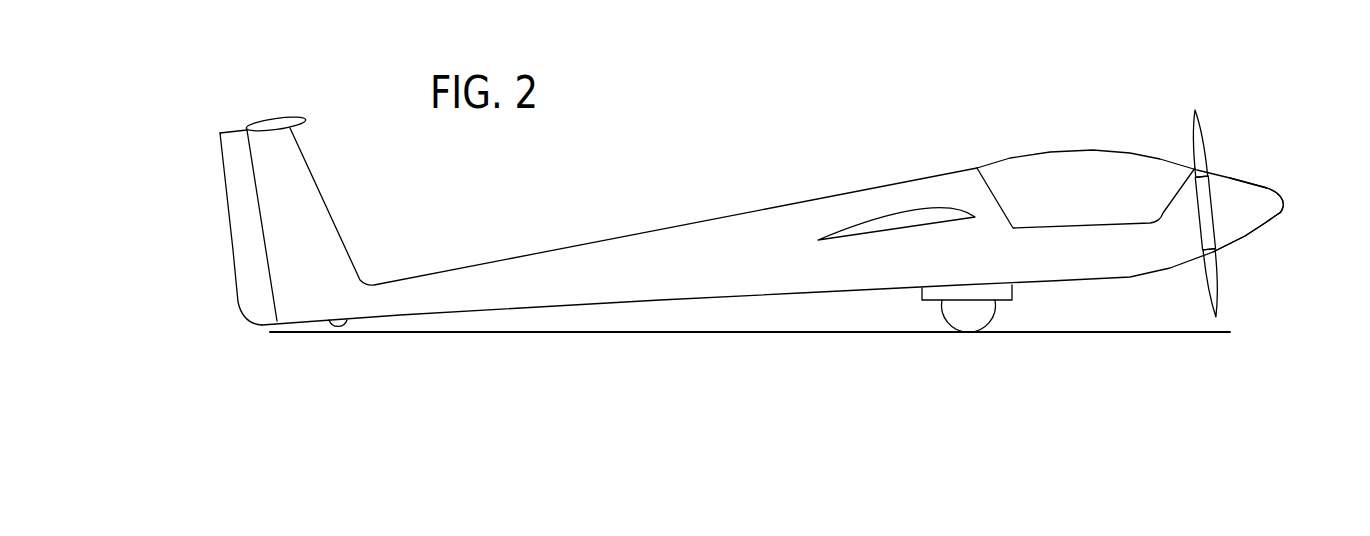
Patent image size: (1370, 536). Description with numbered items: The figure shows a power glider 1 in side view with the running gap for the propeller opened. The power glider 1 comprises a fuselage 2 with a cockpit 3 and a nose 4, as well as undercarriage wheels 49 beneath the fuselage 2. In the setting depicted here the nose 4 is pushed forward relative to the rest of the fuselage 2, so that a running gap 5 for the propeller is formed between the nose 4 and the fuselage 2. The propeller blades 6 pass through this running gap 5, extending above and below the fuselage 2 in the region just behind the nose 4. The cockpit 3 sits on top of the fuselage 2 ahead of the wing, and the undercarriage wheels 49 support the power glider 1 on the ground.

The power glider 1 is at (860, 157).
The fuselage 2 is at (1095, 250).
The cockpit 3 is at (1053, 195).
The nose 4 is at (1247, 210).
The running gap 5 is at (1207, 210).
The propeller blades 6 is at (1200, 143).
The undercarriage wheels 49 is at (972, 313).